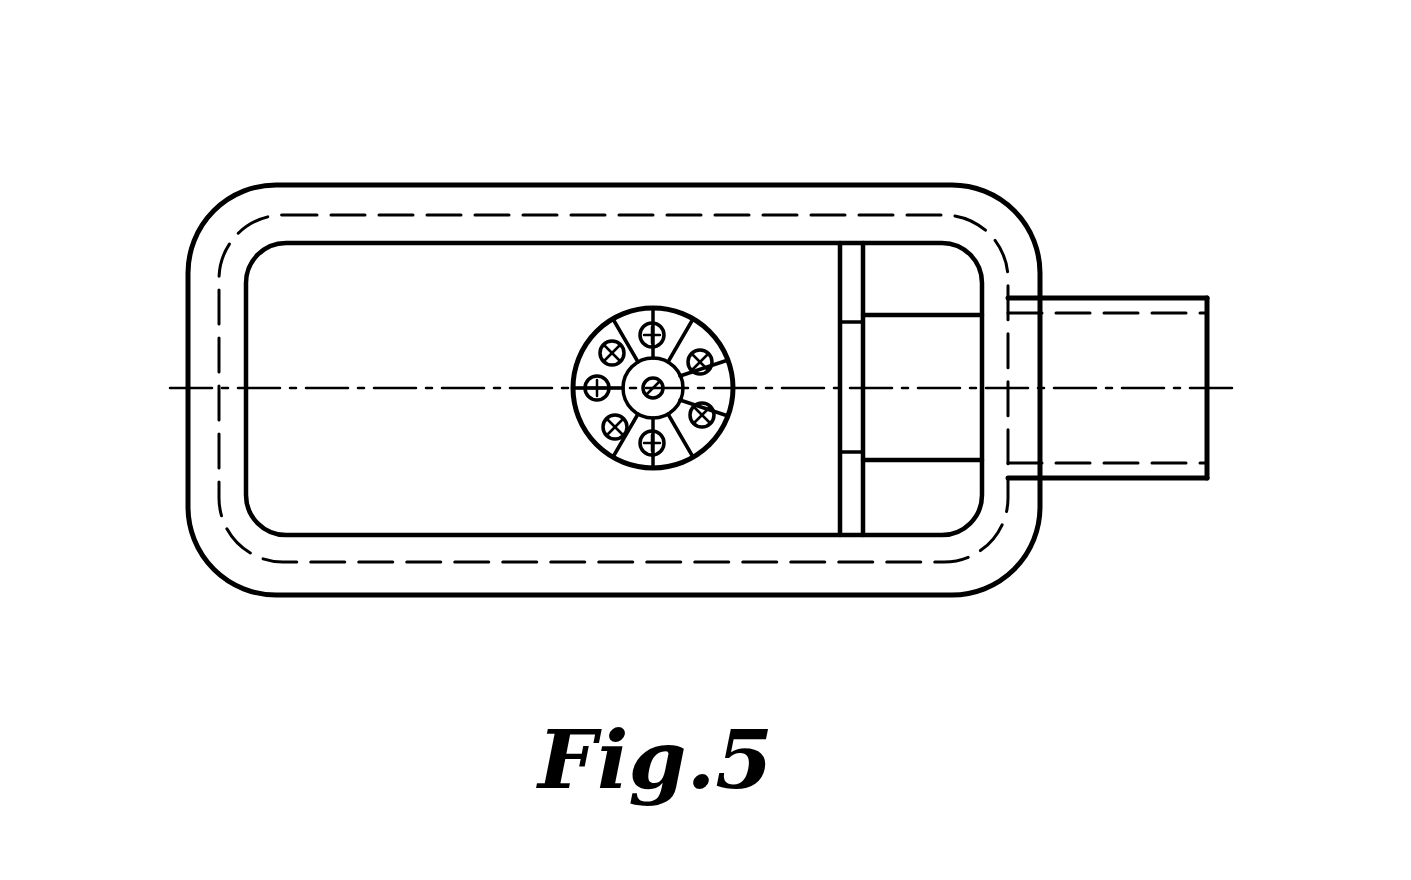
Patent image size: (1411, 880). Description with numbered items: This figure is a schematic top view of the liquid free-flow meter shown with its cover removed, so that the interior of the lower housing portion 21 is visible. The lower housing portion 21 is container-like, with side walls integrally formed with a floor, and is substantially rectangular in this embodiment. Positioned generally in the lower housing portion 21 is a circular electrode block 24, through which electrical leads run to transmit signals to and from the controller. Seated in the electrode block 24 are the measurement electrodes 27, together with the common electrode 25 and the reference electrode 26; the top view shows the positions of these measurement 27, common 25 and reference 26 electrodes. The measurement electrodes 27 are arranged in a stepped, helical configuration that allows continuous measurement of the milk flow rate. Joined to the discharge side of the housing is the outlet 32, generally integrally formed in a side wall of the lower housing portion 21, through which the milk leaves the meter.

The lower housing portion 21 is at (704, 312).
The electrode block 24 is at (676, 375).
The common electrode 25 is at (764, 212).
The reference electrode 26 is at (891, 200).
The measurement electrodes 27 is at (702, 415).
The outlet 32 is at (1204, 477).